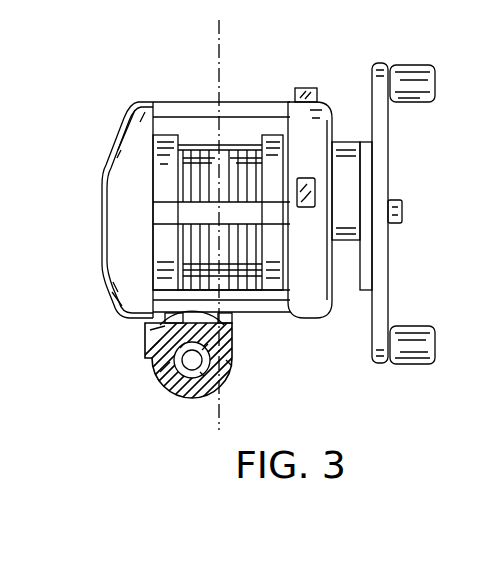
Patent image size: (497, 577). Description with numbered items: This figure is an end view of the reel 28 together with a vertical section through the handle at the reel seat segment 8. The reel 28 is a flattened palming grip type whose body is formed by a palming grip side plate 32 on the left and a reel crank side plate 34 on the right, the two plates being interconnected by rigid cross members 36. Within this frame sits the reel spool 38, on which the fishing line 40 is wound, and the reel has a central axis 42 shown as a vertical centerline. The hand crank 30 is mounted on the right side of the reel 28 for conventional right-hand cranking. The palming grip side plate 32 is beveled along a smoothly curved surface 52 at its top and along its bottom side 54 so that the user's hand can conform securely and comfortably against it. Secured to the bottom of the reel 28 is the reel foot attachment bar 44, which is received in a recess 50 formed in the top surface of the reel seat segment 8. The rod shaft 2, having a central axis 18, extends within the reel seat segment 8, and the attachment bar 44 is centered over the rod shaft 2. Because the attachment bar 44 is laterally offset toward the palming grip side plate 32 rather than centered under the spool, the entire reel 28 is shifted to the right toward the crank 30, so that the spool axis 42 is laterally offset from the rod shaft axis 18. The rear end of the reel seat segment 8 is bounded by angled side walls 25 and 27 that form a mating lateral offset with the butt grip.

The rod shaft 2 is at (208, 387).
The reel seat segment 8 is at (160, 377).
The rod shaft central axis 18 is at (192, 363).
The side wall 25 is at (140, 358).
The side wall 27 is at (230, 365).
The reel 28 is at (128, 104).
The hand crank 30 is at (415, 65).
The palming grip side plate 32 is at (102, 230).
The reel crank side plate 34 is at (335, 122).
The rigid cross members 36 is at (260, 102).
The reel spool 38 is at (197, 143).
The fishing line 40 is at (260, 183).
The reel central axis 42 is at (219, 70).
The reel foot attachment bar 44 is at (227, 317).
The recess 50 is at (145, 337).
The smoothly curved surface 52 is at (112, 148).
The bottom side 54 is at (110, 290).